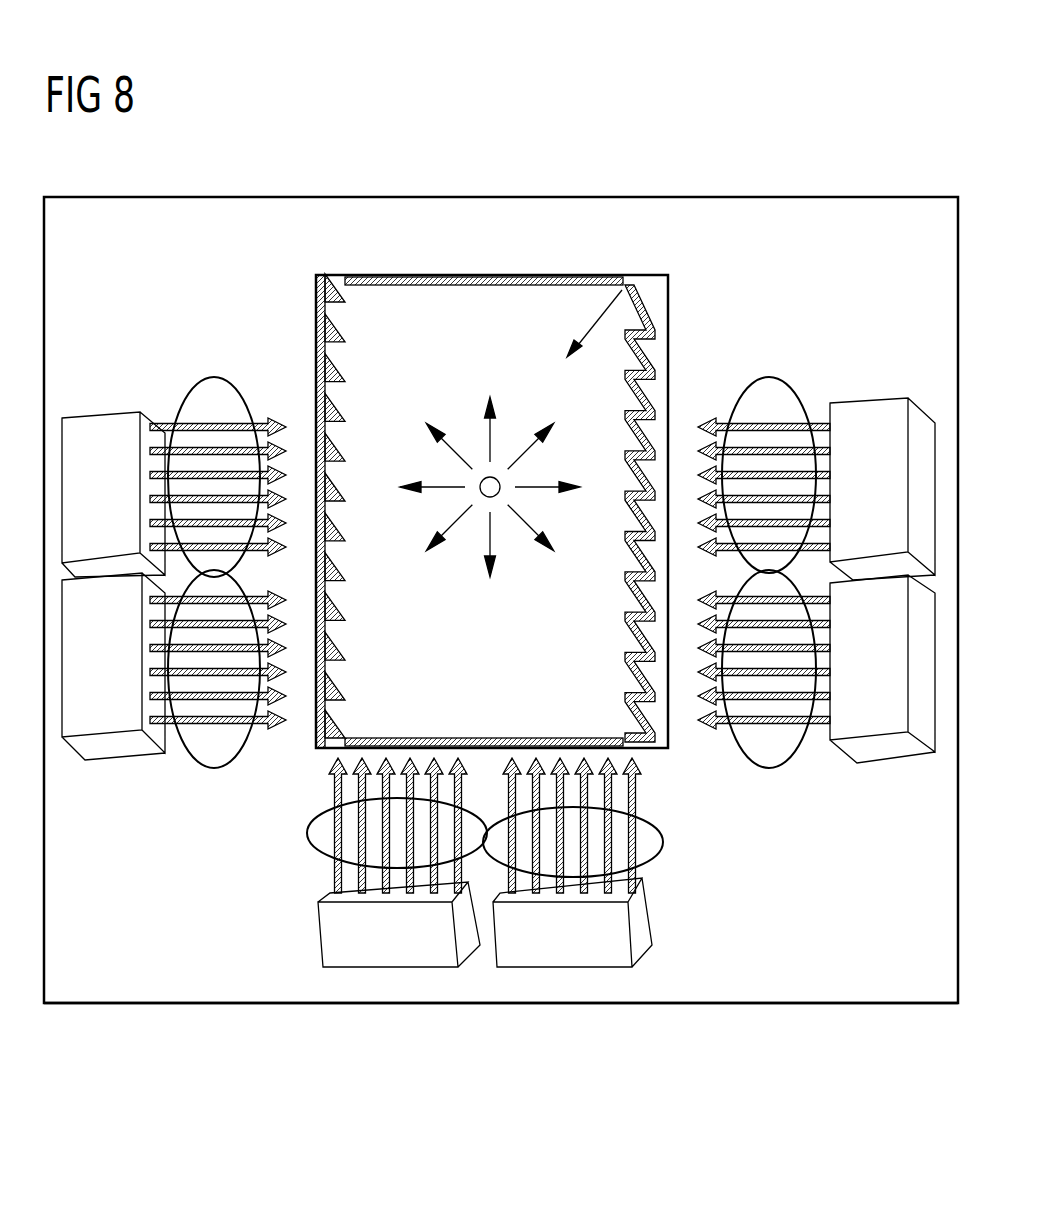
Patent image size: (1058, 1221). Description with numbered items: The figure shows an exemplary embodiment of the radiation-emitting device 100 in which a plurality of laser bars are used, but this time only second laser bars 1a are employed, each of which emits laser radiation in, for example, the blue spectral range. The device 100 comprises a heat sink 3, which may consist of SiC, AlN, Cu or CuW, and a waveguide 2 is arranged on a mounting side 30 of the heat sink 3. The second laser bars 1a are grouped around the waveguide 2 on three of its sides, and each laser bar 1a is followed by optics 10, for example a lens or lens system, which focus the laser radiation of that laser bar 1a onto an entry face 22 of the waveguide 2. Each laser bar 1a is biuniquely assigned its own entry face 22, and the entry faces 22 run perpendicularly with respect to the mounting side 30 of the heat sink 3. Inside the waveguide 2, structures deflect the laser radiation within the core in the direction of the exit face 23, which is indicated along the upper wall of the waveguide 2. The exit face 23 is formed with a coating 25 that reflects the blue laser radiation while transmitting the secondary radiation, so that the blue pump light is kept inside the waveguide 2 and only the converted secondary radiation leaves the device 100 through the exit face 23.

The radiation-emitting device 100 is at (866, 174).
The second laser bar 1a is at (100, 420).
The optics 10 is at (212, 377).
The entry face 22 is at (313, 438).
The waveguide 2 is at (307, 735).
The exit face 23 is at (456, 275).
The coating 25 is at (567, 275).
The heat sink 3 is at (761, 995).
The mounting side 30 is at (911, 990).